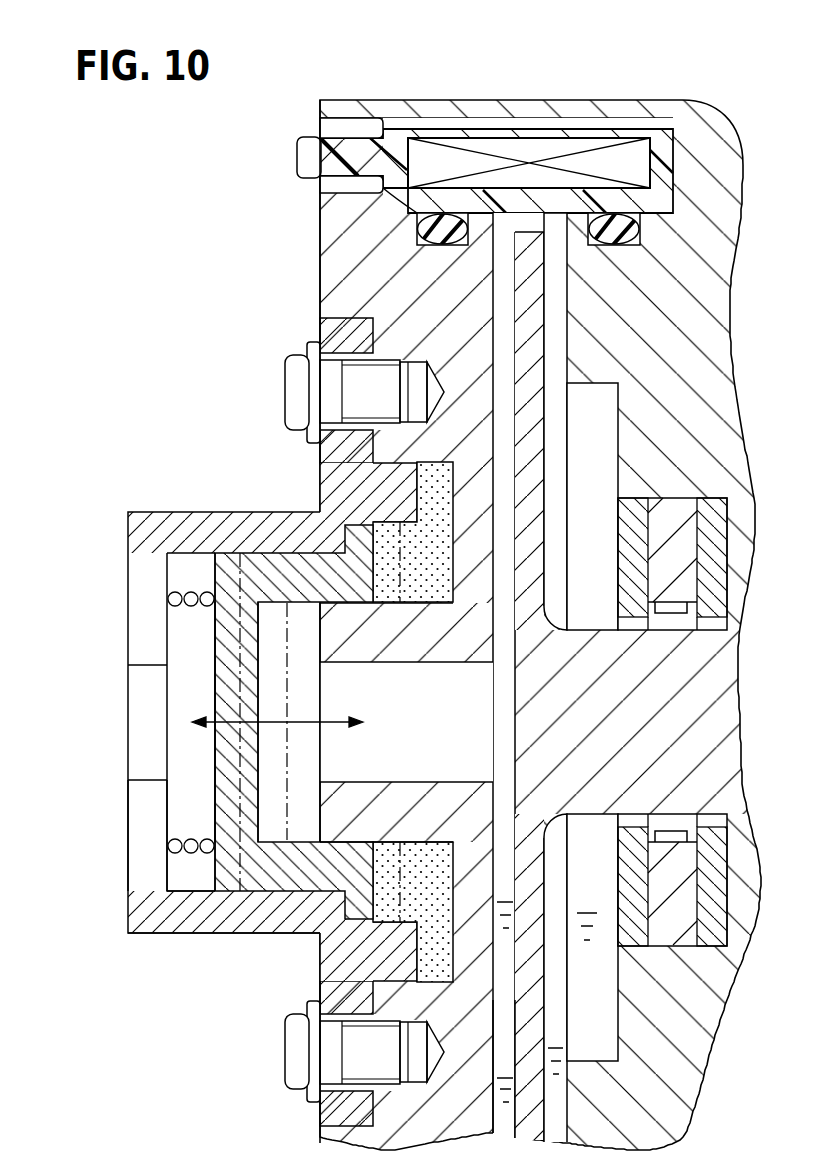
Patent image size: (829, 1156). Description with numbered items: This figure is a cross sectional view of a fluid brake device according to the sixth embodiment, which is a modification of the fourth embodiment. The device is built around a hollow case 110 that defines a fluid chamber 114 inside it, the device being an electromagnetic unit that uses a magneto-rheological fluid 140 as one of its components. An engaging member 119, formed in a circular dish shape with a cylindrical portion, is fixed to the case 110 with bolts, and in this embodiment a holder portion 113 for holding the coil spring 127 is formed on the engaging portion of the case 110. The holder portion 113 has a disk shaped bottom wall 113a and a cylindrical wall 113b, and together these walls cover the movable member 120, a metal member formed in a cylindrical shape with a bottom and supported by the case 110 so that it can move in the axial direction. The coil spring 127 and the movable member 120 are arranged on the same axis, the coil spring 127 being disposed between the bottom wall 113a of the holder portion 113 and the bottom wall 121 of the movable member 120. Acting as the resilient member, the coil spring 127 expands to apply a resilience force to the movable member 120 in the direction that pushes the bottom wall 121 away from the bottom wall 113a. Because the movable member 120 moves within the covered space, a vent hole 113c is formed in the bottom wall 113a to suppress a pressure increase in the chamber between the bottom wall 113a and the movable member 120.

The case 110 is at (330, 258).
The fluid chamber 114 is at (532, 224).
The engaging member 119 is at (340, 468).
The holder portion 113 is at (127, 527).
The coil spring 127 is at (172, 600).
The movable member 120 is at (213, 632).
The bottom wall 121 is at (222, 664).
The vent hole 113c is at (148, 779).
The bottom wall 113a is at (137, 801).
The cylindrical wall 113b is at (237, 917).
The magneto-rheological fluid (MRF) 140 is at (502, 1116).